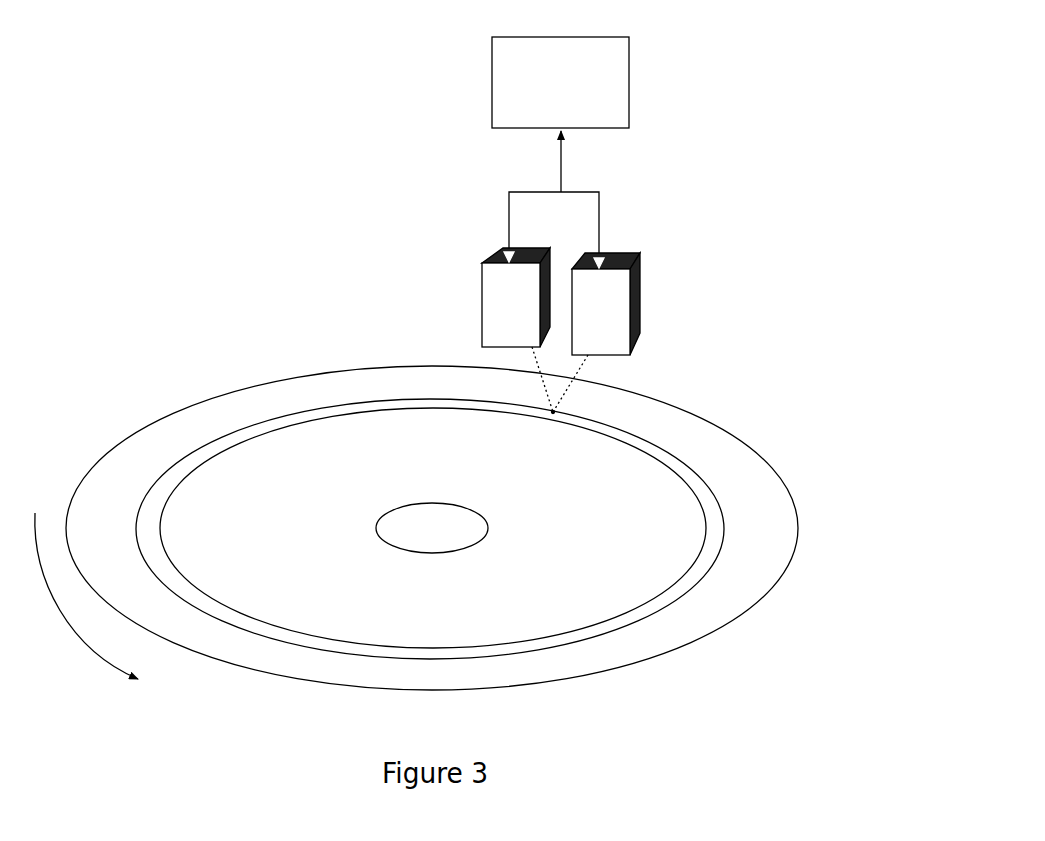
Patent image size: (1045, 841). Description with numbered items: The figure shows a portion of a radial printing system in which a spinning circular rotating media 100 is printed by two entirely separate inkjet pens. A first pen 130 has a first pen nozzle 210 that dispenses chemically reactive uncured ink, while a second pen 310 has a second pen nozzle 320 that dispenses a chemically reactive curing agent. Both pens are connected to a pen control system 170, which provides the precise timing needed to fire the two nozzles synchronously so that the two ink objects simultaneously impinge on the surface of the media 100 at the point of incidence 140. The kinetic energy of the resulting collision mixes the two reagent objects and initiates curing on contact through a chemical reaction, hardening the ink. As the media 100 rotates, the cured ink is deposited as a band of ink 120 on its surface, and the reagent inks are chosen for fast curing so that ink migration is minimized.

The spinning circular rotating media 100 is at (566, 689).
The band of ink 120 is at (328, 406).
The inkjet printing pen 130 is at (472, 280).
The second pen 310 is at (651, 280).
The pen control system 170 is at (634, 79).
The first pen nozzle 210 is at (531, 365).
The second pen nozzle 320 is at (578, 391).
The point of incidence 140 is at (562, 416).